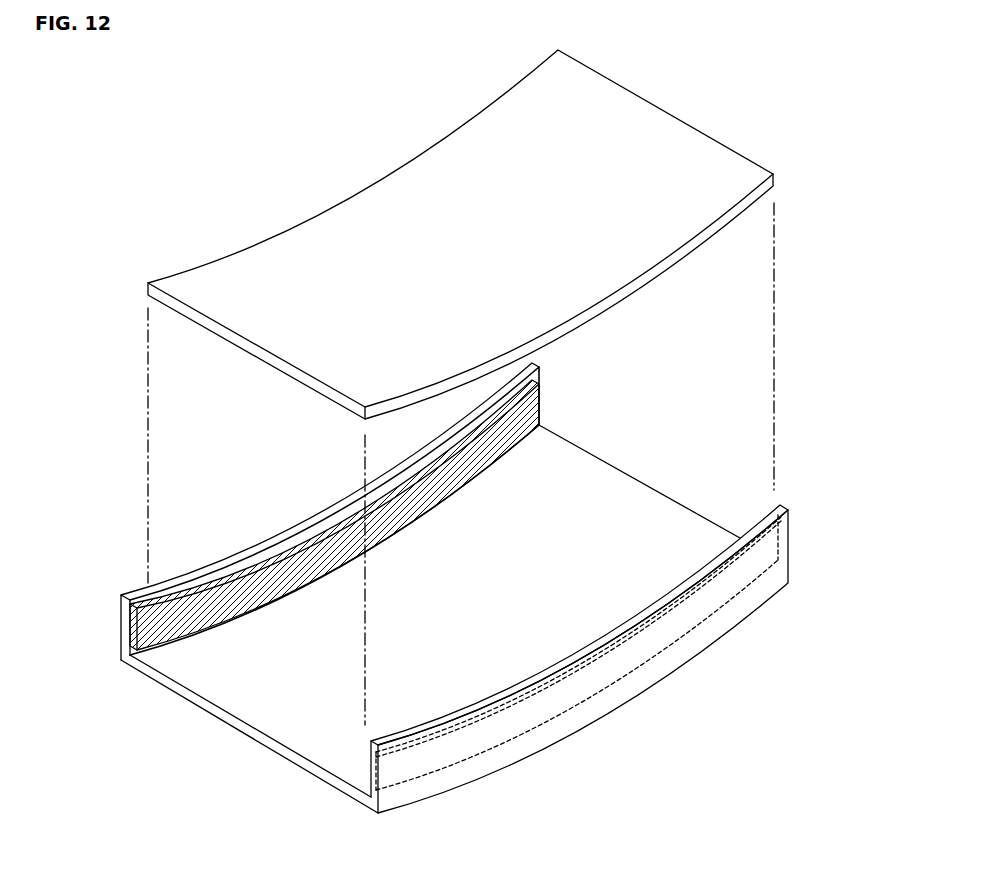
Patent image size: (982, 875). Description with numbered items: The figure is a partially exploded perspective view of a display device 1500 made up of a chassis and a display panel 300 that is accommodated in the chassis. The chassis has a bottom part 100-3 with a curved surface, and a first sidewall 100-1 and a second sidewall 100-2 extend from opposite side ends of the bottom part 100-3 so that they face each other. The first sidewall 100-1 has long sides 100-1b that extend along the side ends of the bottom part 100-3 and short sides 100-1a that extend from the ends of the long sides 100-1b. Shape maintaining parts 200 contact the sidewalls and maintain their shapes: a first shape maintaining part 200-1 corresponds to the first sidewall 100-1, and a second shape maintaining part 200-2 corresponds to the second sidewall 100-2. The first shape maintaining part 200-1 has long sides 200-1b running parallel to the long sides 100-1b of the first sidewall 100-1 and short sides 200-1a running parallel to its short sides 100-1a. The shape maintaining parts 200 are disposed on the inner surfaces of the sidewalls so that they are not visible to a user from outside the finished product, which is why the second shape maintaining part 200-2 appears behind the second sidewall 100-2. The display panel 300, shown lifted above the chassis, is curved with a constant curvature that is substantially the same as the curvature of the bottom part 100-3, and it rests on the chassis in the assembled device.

The display device 1500 is at (387, 66).
The display panel 300 is at (707, 147).
The first sidewall 100-1 is at (347, 501).
The short side of first sidewall 100-1a is at (119, 612).
The long side of first sidewall 100-1b is at (325, 515).
The second sidewall 100-2 is at (785, 533).
The bottom part 100-3 is at (625, 488).
The shape maintaining part 200 is at (125, 749).
The first shape maintaining part 200-1 is at (362, 559).
The short side of first shape maintaining part 200-1a is at (141, 628).
The long side of first shape maintaining part 200-1b is at (293, 550).
The second shape maintaining part 200-2 is at (402, 758).